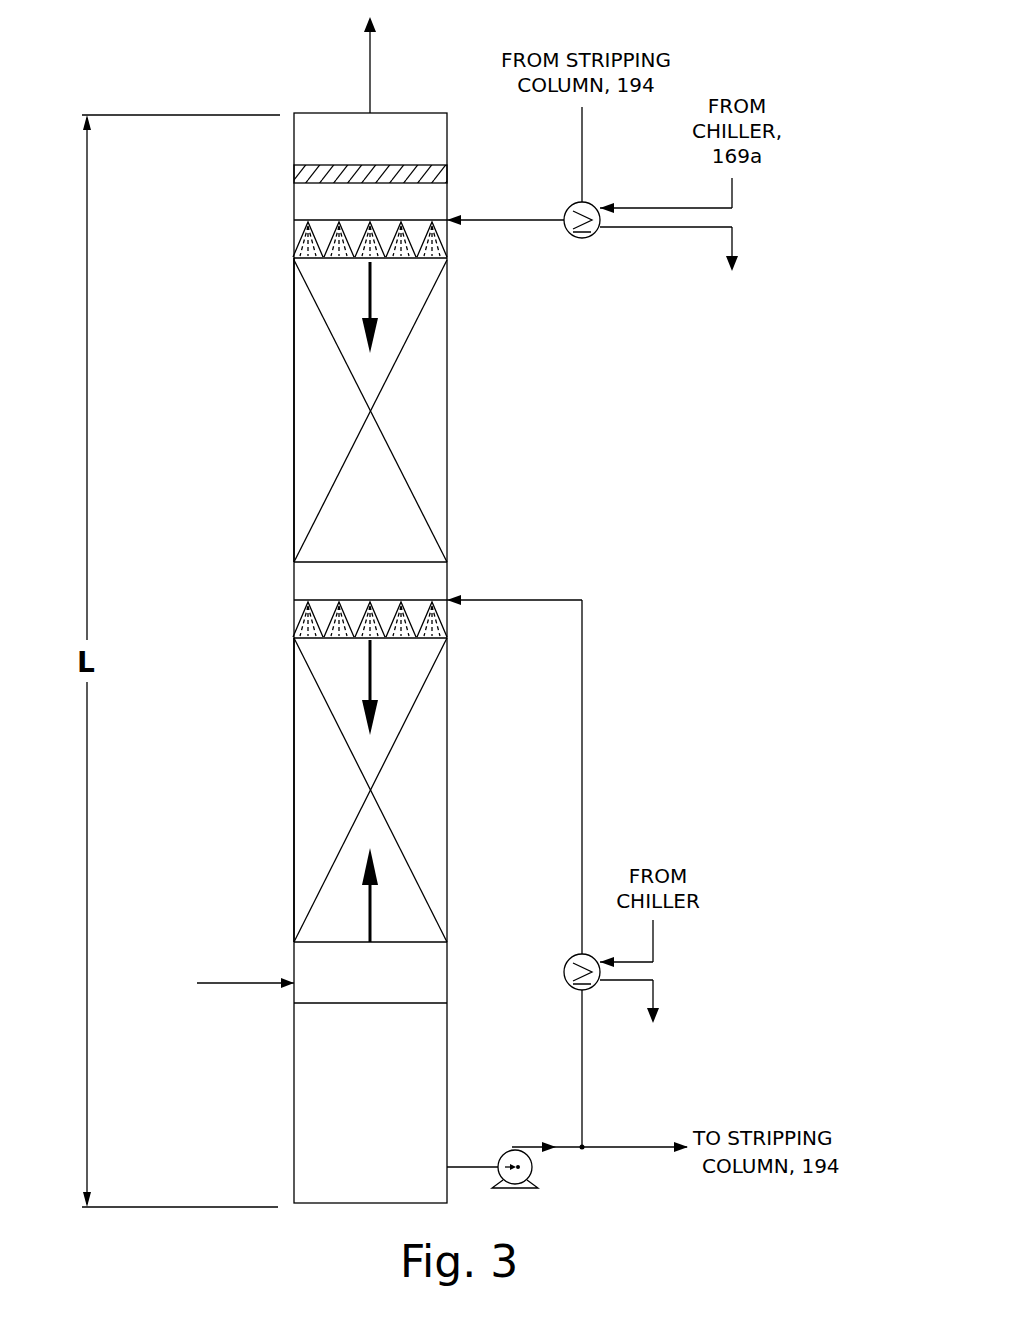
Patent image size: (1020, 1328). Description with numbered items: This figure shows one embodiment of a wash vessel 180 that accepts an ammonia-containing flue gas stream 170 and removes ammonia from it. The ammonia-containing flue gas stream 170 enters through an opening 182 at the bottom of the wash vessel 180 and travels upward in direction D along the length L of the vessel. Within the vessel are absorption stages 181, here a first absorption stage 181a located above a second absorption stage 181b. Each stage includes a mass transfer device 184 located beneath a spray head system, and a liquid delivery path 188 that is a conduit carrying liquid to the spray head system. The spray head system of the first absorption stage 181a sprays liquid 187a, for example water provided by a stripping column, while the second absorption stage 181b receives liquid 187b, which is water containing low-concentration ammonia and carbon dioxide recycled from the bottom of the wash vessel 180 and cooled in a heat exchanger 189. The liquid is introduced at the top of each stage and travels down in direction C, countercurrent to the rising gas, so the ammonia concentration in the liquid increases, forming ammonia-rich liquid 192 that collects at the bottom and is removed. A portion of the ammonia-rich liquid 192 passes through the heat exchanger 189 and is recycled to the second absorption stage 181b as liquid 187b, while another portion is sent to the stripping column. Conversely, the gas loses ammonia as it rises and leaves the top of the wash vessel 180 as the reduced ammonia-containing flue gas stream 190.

The ammonia-containing flue gas stream 170 is at (245, 983).
The wash vessel 180 is at (294, 582).
The absorption stages 181 is at (264, 788).
The first absorption stage 181a is at (447, 452).
The second absorption stage 181b is at (447, 745).
The opening 182 is at (294, 983).
The mass transfer device 184 is at (293, 452).
The liquid introduced to the first absorption stage 187a is at (300, 245).
The liquid introduced to the second absorption stage 187b is at (300, 625).
The liquid delivery path 188 is at (575, 407).
The heat exchanger 189 is at (570, 961).
The reduced ammonia-containing flue gas stream 190 is at (372, 72).
The ammonia-rich liquid 192 is at (582, 1067).